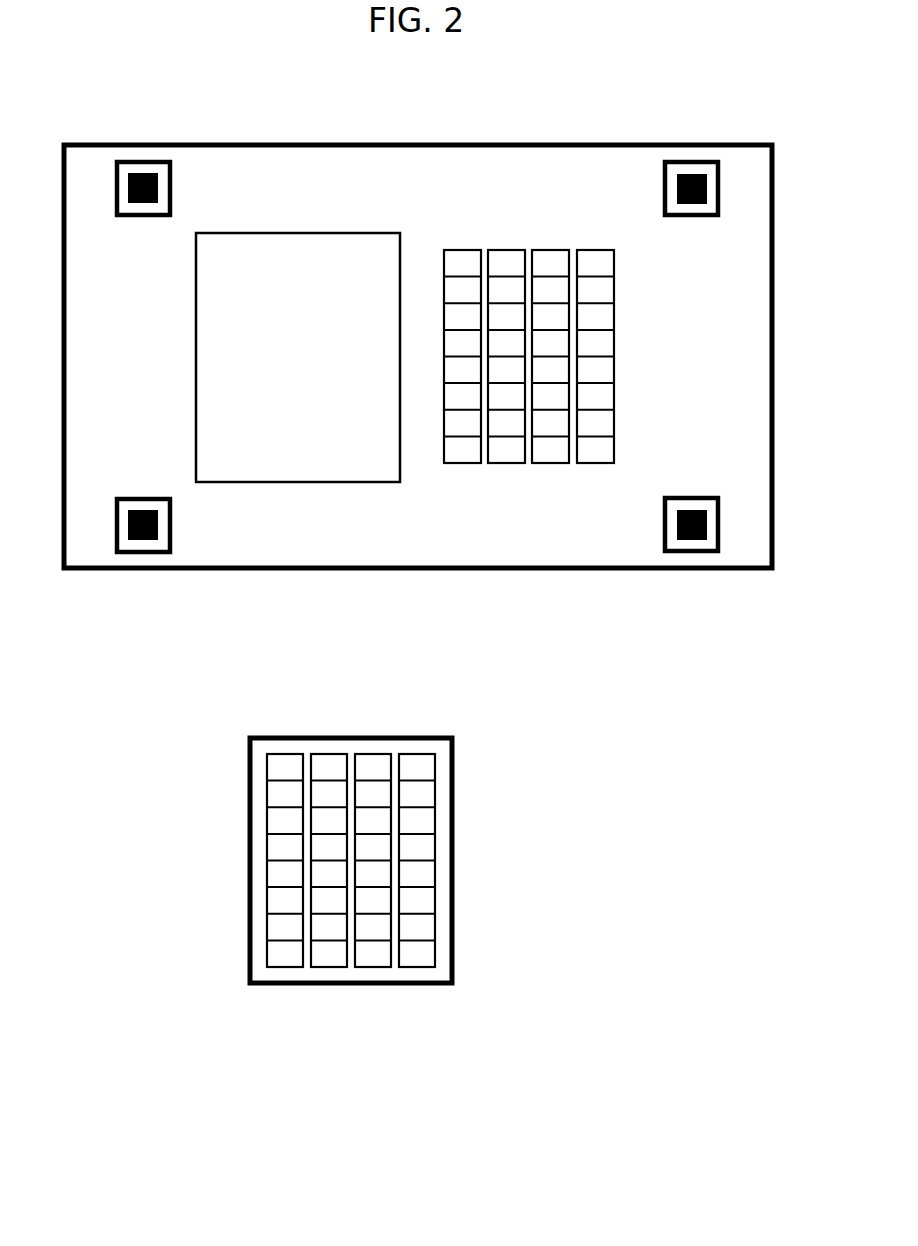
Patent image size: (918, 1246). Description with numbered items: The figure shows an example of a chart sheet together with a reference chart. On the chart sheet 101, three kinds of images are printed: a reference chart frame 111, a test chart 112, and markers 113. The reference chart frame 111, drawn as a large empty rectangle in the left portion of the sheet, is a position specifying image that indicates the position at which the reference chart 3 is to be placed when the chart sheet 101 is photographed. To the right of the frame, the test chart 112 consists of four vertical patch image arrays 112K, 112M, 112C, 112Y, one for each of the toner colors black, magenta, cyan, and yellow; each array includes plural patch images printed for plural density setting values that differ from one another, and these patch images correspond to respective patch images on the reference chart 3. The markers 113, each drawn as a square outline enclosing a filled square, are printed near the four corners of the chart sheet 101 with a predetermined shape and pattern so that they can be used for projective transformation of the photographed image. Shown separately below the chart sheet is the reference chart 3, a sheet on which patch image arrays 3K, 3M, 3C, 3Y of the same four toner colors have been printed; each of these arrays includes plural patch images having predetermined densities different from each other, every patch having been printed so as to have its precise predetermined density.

The chart sheet 101 is at (737, 142).
The reference chart frame 111 is at (305, 481).
The test chart 112 is at (537, 368).
The patch image array 112K is at (462, 463).
The patch image array 112M is at (503, 463).
The patch image array 112C is at (555, 463).
The patch image array 112Y is at (595, 463).
The marker 113 is at (142, 160).
The reference chart 3 is at (351, 919).
The patch image array 3K is at (282, 967).
The patch image array 3M is at (326, 967).
The patch image array 3C is at (378, 967).
The patch image array 3Y is at (418, 967).